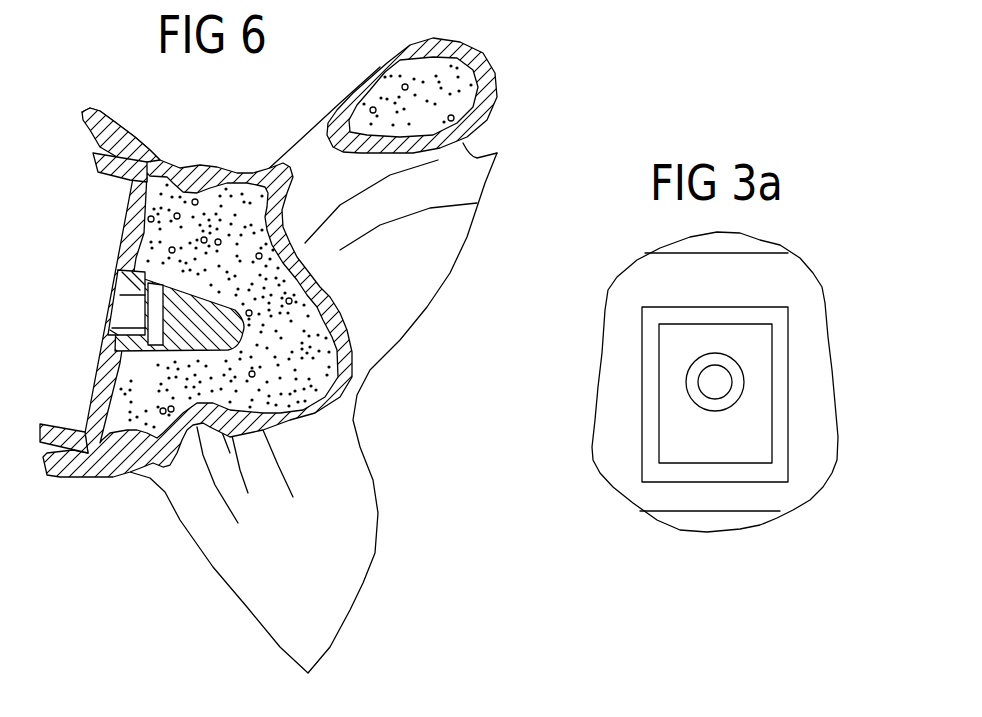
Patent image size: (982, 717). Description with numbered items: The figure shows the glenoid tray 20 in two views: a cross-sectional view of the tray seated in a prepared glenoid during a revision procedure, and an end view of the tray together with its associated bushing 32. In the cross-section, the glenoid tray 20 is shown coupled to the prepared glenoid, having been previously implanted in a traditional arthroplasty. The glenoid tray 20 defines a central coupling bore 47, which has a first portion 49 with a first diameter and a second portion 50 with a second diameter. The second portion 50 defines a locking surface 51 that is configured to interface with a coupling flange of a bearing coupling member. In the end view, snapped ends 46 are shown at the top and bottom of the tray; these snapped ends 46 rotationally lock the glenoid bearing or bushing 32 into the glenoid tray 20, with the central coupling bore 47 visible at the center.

In FIG. 6, the glenoid tray 20 is at (130, 237).
In FIG. 3A, the glenoid tray 20 is at (698, 517).
In FIG. 3A, the bushing 32 is at (608, 462).
In FIG. 6, the snapped ends 46 is at (97, 168).
In FIG. 3A, the snapped ends 46 is at (692, 245).
In FIG. 3A, the central coupling bore 47 is at (697, 385).
In FIG. 6, the first portion 49 is at (130, 310).
In FIG. 6, the second portion 50 is at (147, 333).
In FIG. 3A, the second portion 50 is at (733, 380).
In FIG. 6, the locking surface 51 is at (153, 268).